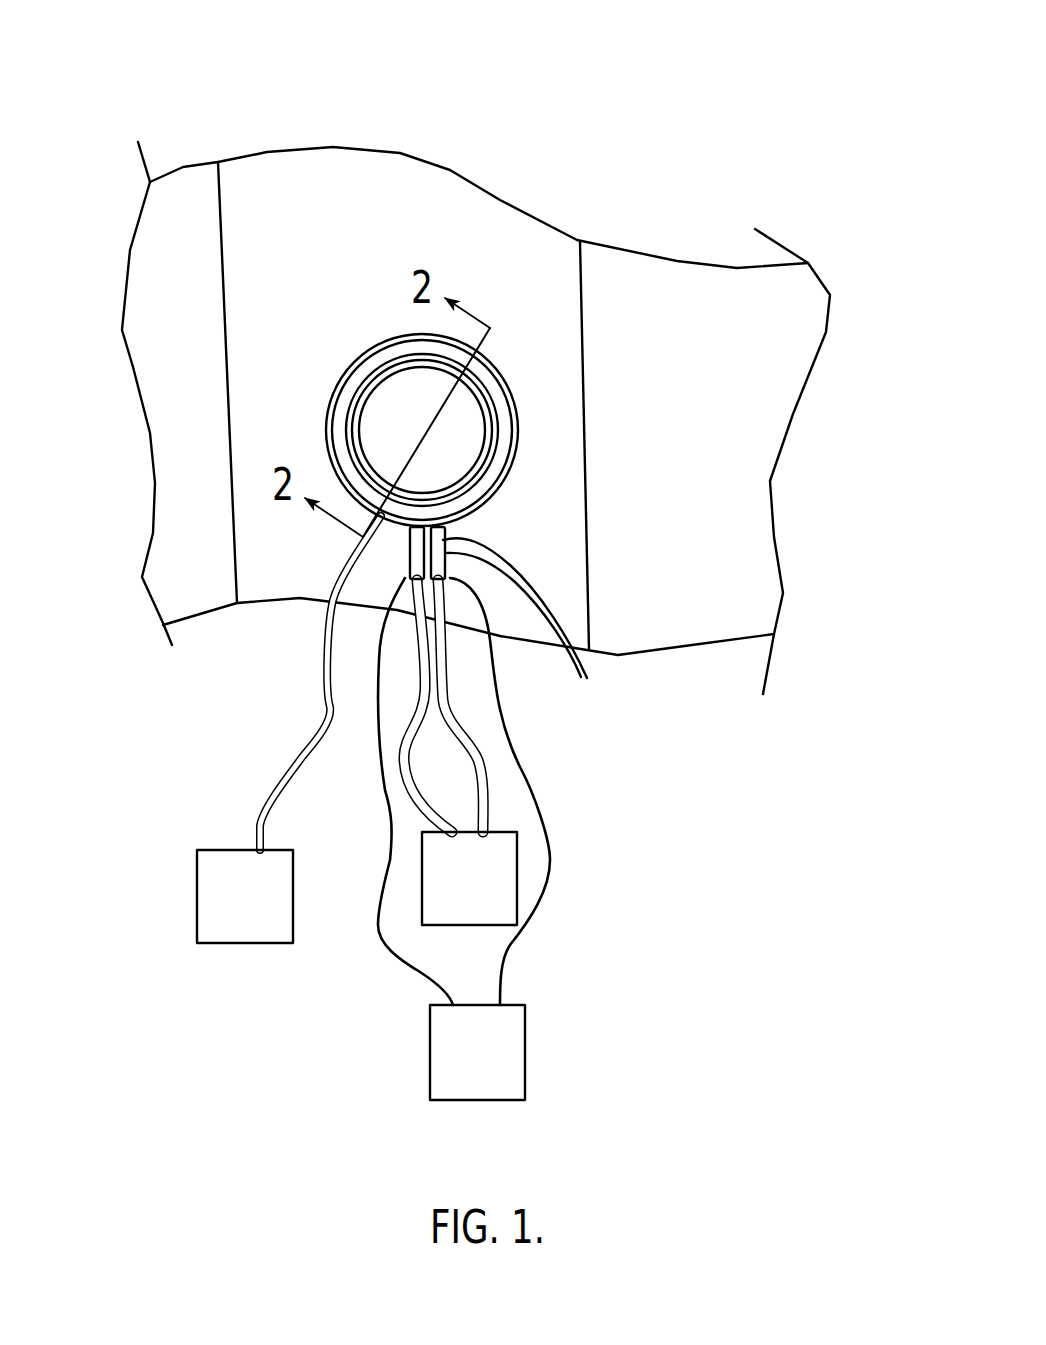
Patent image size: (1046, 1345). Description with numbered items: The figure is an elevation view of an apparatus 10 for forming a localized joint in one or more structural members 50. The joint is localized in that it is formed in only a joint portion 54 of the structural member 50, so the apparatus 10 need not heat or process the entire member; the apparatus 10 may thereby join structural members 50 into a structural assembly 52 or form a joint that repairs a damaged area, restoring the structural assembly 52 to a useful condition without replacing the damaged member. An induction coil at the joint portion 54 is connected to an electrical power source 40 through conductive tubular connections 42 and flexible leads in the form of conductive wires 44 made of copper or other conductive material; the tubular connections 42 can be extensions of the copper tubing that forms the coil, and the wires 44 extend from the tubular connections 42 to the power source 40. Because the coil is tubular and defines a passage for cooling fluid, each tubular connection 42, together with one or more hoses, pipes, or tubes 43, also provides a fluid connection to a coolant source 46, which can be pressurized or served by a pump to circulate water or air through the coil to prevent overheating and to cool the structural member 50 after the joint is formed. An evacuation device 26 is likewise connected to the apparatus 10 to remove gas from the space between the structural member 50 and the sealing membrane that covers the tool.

The apparatus 10 is at (497, 237).
The structural member 50 is at (185, 167).
The structural assembly 52 is at (638, 668).
The joint portion 54 is at (508, 352).
The conductive tubular connections 42 is at (530, 633).
The tubes 43 is at (400, 763).
The conductive wires 44 is at (380, 933).
The coolant source 46 is at (504, 932).
The electrical power source 40 is at (525, 1055).
The evacuation device 26 is at (197, 903).